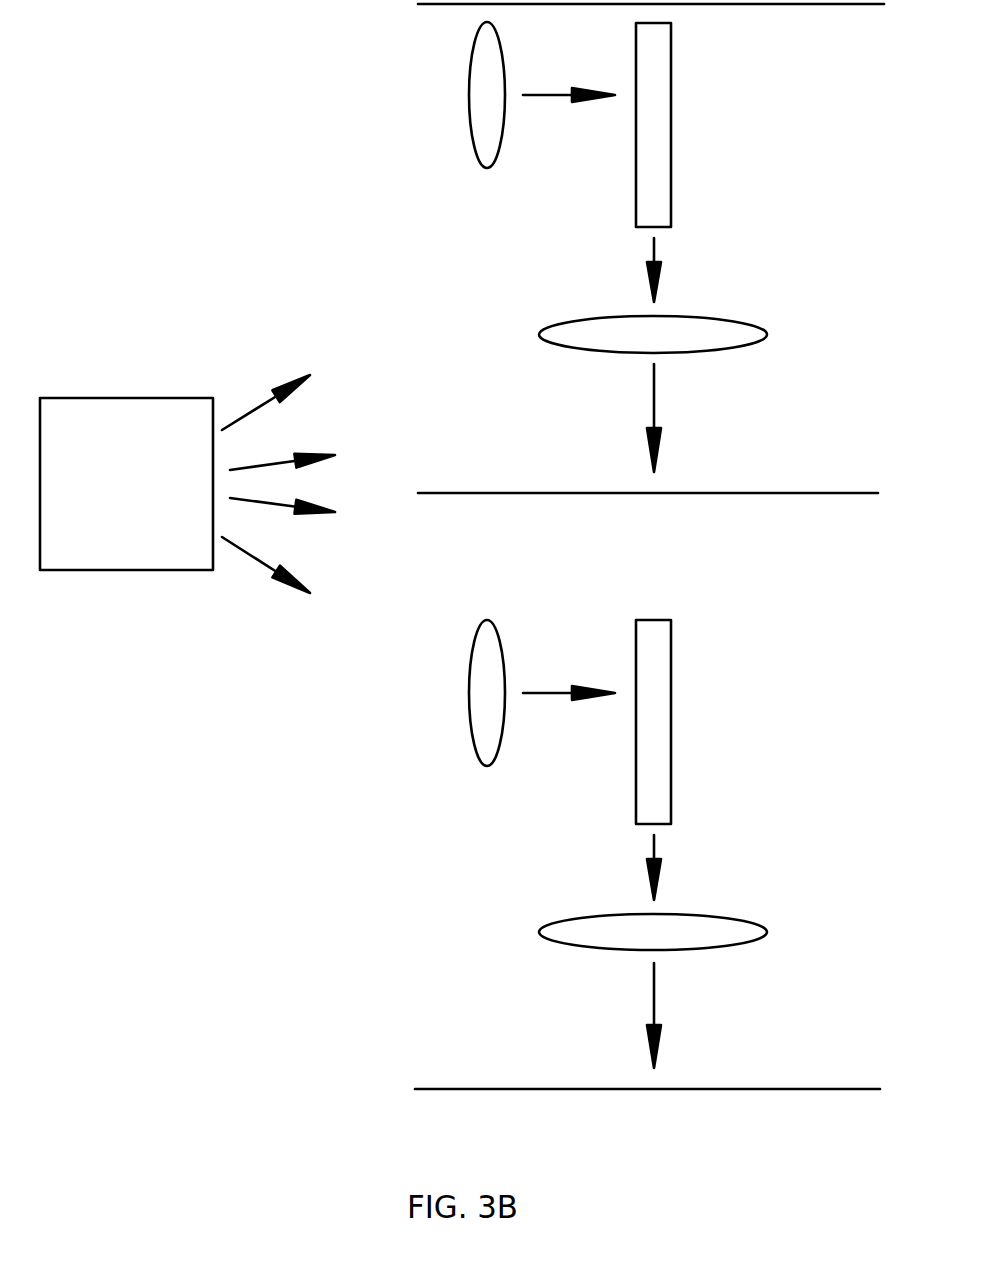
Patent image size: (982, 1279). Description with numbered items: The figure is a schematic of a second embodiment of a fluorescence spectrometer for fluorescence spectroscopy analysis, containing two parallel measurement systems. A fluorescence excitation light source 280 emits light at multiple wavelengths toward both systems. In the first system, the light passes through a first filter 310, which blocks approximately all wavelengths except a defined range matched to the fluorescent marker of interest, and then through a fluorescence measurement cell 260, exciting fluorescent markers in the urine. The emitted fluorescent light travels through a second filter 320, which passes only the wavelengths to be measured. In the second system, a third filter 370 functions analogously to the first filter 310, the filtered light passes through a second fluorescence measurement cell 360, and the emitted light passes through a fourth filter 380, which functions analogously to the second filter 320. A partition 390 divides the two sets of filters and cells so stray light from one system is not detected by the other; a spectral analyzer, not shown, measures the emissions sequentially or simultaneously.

The fluorescence excitation light source 280 is at (101, 407).
The first filter 310 is at (483, 67).
The fluorescence measurement cell 260 is at (662, 125).
The second filter 320 is at (738, 333).
The partition 390 is at (838, 490).
The third filter 370 is at (483, 705).
The second fluorescence measurement cell 360 is at (658, 663).
The fourth filter 380 is at (722, 928).